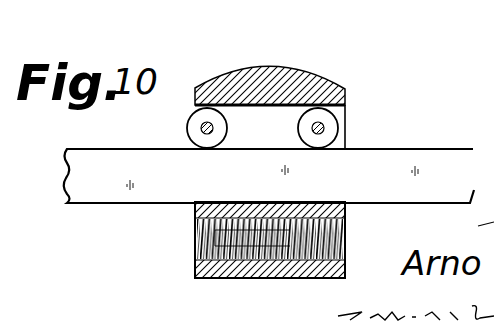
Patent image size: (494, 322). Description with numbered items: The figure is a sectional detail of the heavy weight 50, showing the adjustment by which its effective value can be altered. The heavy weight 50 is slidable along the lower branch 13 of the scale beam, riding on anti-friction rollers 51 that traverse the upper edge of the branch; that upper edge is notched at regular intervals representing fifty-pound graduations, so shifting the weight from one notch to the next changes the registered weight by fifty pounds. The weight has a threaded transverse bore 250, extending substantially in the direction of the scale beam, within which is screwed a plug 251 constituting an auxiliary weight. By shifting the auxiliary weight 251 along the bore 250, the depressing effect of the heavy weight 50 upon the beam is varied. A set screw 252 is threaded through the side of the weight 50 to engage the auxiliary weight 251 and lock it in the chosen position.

The lower branch 13 is at (437, 150).
The heavy weight 50 is at (316, 80).
The anti-friction rollers 51 is at (193, 118).
The threaded transverse bore 250 is at (346, 231).
The plug 251 is at (252, 262).
The set screw 252 is at (272, 228).